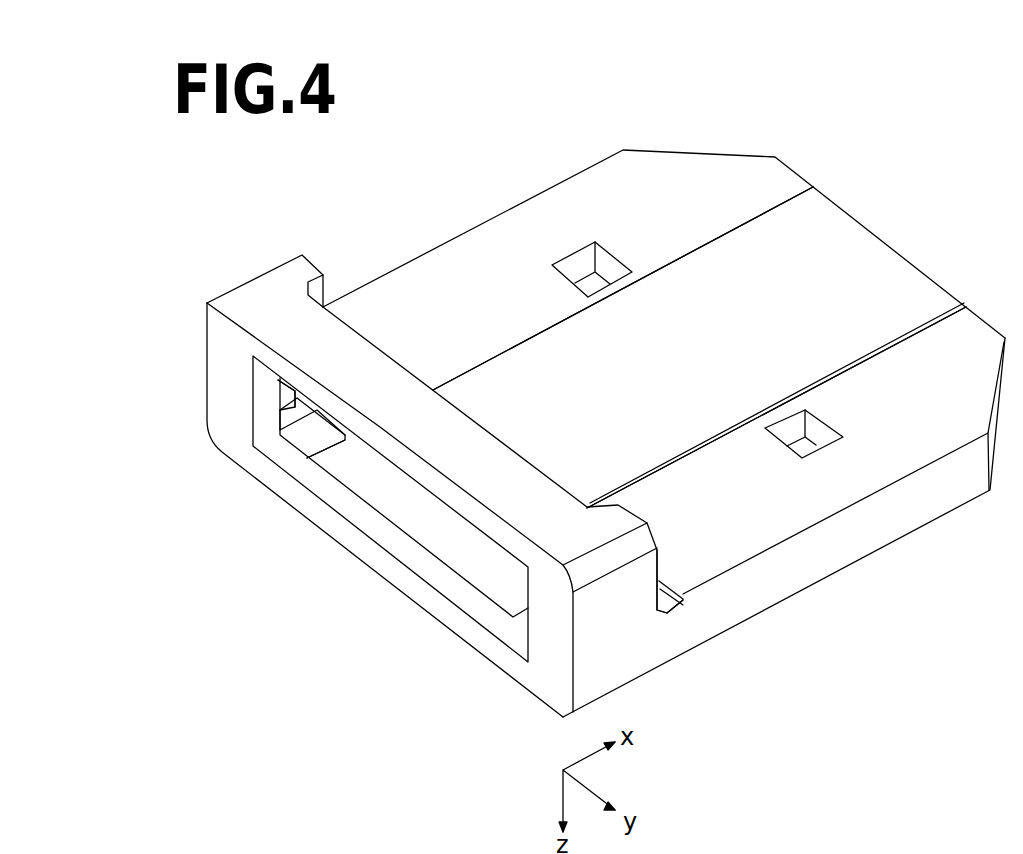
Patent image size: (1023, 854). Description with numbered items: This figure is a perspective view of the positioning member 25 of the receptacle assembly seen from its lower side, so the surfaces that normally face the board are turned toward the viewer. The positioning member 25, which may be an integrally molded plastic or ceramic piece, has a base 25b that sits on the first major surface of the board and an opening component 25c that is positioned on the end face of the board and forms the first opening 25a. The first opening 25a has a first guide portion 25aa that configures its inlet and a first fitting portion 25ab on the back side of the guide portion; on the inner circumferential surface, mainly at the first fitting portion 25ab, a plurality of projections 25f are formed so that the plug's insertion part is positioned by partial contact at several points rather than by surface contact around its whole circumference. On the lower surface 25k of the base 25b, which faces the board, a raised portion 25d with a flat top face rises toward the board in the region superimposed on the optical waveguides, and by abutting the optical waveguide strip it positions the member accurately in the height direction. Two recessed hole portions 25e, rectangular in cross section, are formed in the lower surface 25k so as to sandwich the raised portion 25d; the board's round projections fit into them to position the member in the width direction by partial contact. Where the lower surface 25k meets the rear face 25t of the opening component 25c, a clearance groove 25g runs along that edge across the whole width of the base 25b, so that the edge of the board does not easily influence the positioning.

The positioning member 25 is at (593, 73).
The first opening 25a is at (300, 617).
The first guide portion 25aa is at (283, 448).
The first fitting portion 25ab is at (325, 428).
The base 25b is at (679, 167).
The opening component 25c is at (260, 287).
The raised portion 25d is at (507, 370).
The hole portions 25e is at (578, 263).
The projections 25f is at (300, 398).
The clearance groove 25g is at (667, 603).
The lower surface 25k is at (776, 510).
The rear face 25t is at (659, 565).